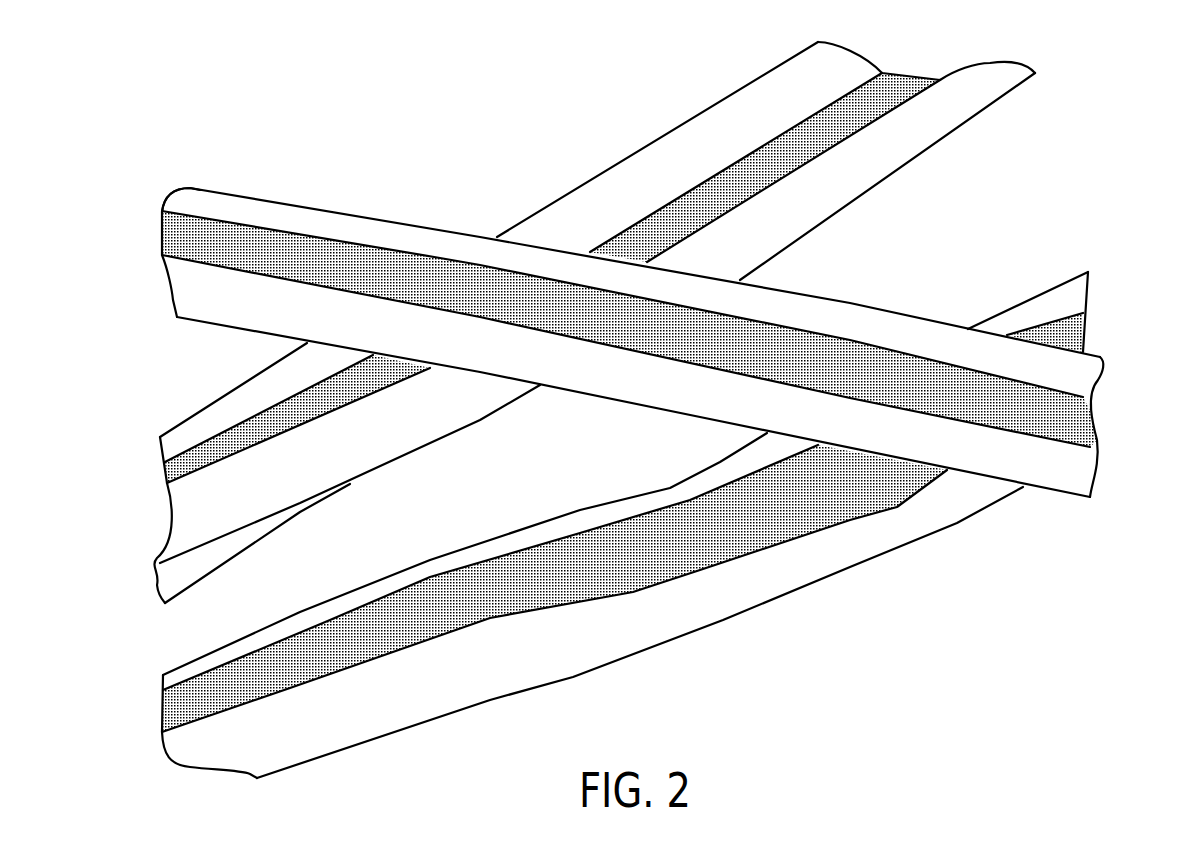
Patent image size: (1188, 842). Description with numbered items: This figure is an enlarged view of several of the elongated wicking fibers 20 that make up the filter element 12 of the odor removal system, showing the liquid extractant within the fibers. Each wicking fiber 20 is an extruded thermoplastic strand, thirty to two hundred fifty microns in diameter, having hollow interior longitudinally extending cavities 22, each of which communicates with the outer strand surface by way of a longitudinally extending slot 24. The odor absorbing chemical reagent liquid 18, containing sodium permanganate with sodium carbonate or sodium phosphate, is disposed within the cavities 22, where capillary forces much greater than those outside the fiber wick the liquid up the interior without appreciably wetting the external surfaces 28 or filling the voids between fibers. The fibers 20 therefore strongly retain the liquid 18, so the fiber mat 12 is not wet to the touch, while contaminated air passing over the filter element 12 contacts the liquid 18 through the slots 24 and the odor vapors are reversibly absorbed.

The filter element 12 is at (1025, 238).
The odor absorbing chemical reagent liquid 18 is at (850, 113).
The wicking fiber 20 is at (916, 127).
The longitudinally extending cavity 22 is at (203, 248).
The longitudinally extending slot 24 is at (831, 394).
The external surface 28 is at (402, 232).